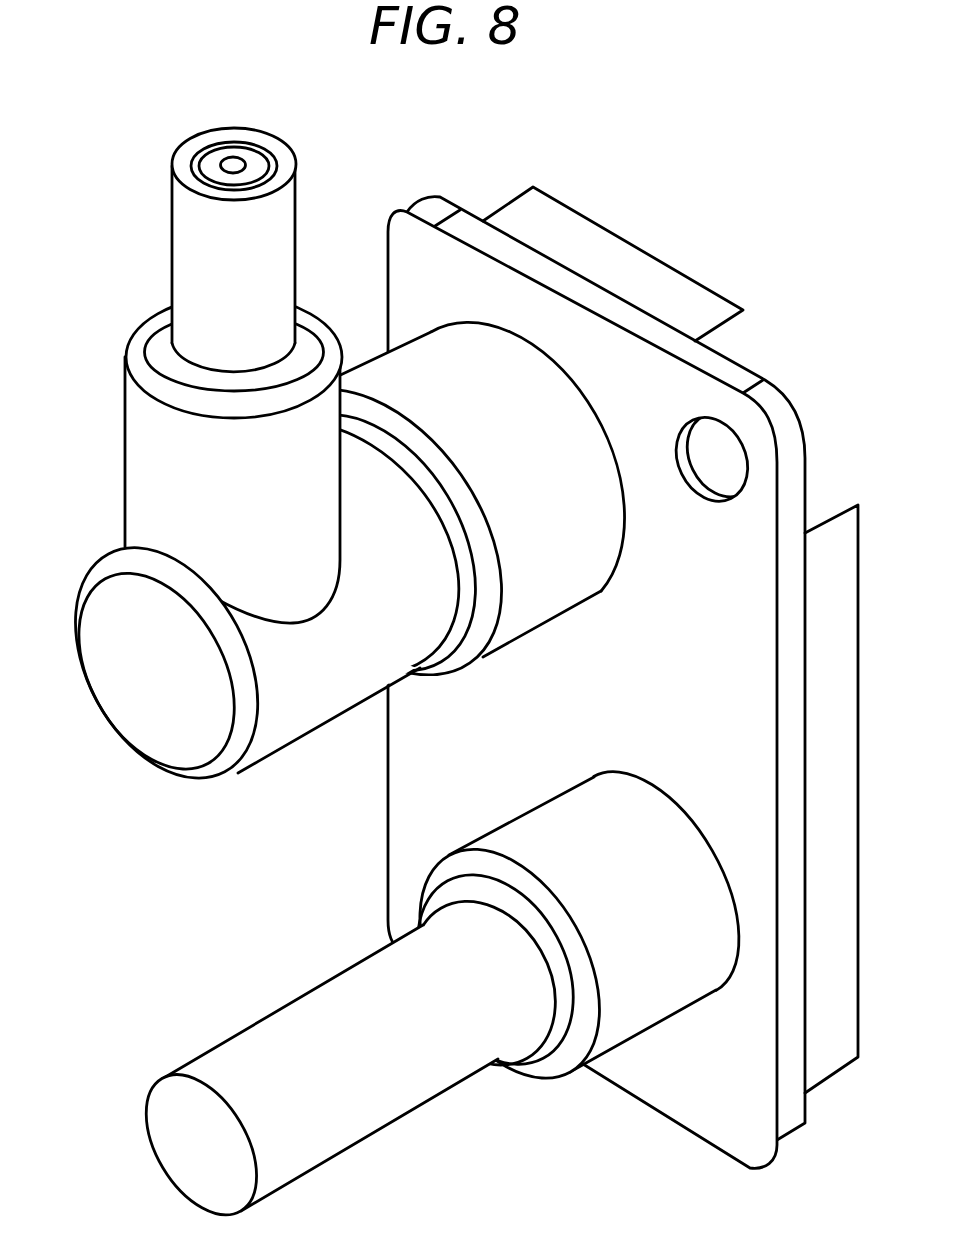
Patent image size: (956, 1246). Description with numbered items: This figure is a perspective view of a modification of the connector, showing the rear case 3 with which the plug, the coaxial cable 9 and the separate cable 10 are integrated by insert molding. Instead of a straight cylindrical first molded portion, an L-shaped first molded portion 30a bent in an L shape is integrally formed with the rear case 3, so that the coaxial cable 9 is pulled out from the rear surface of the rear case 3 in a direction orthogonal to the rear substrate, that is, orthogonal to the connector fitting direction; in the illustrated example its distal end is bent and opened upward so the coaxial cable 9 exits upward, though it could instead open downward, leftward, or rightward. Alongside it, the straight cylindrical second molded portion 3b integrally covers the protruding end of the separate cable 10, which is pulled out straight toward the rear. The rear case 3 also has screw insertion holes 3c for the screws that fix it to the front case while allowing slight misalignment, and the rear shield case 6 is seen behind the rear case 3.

The rear case 3 is at (417, 240).
The second molded portion 3b is at (541, 1073).
The screw insertion holes 3c is at (727, 447).
The rear shield case 6 is at (643, 247).
The coaxial cable 9 is at (168, 230).
The separate cable 10 is at (265, 1018).
The L-shaped first molded portion 30a is at (125, 468).